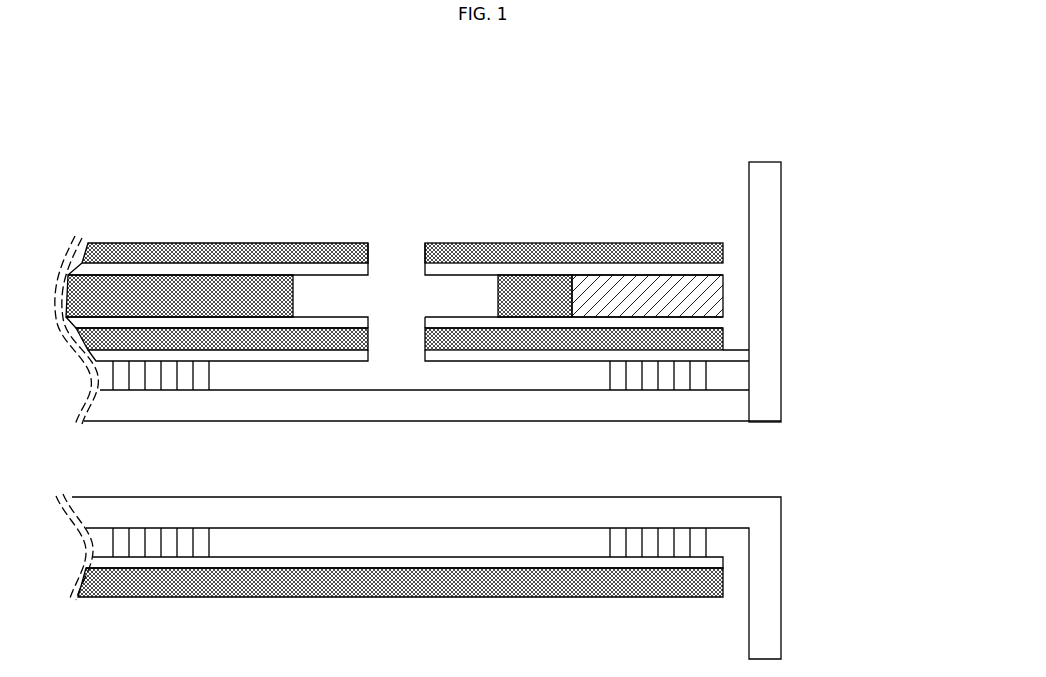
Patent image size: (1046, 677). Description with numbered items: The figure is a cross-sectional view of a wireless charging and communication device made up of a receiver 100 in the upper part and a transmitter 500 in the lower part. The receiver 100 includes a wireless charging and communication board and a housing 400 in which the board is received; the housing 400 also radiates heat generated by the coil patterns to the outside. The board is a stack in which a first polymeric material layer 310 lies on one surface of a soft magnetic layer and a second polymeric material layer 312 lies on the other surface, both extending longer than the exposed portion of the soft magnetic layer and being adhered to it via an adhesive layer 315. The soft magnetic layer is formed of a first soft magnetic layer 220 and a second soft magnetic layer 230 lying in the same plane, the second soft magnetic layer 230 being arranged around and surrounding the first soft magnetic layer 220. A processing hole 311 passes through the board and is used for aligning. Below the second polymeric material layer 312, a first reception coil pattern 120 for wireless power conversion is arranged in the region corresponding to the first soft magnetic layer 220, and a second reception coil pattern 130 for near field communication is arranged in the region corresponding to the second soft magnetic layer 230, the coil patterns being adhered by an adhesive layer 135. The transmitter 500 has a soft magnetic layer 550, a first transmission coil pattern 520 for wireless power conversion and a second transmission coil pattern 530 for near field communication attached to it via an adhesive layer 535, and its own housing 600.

The receiver 100 is at (852, 162).
The first reception coil pattern 120 is at (120, 392).
The second reception coil pattern 130 is at (625, 392).
The adhesive layer 135 is at (723, 356).
The first soft magnetic layer 220 is at (205, 282).
The second soft magnetic layer 230 is at (723, 293).
The first polymeric material layer 310 is at (723, 250).
The processing hole 311 is at (401, 243).
The second polymeric material layer 312 is at (723, 339).
The adhesive layer 315 is at (723, 268).
The housing 400 is at (763, 176).
The transmitter 500 is at (790, 497).
The first transmission coil pattern 520 is at (162, 529).
The second transmission coil pattern 530 is at (658, 529).
The adhesive layer 535 is at (410, 562).
The soft magnetic layer 550 is at (568, 590).
The housing 600 is at (728, 505).